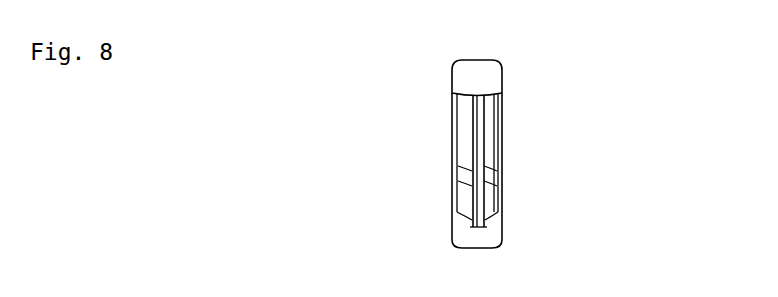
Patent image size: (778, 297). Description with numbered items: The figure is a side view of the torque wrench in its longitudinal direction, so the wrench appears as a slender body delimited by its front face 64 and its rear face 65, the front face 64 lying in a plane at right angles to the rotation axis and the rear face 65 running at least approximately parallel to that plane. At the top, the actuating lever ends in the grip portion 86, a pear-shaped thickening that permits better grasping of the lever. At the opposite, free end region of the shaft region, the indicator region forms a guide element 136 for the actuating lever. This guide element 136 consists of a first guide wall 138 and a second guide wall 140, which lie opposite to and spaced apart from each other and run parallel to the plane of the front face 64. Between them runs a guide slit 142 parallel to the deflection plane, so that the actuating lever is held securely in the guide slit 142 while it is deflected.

The grip portion 86 is at (490, 77).
The front face 64 is at (453, 143).
The rear face 65 is at (503, 137).
The first guide wall 138 is at (453, 160).
The second guide wall 140 is at (502, 158).
The guide slit 142 is at (502, 187).
The guide element 136 is at (495, 232).